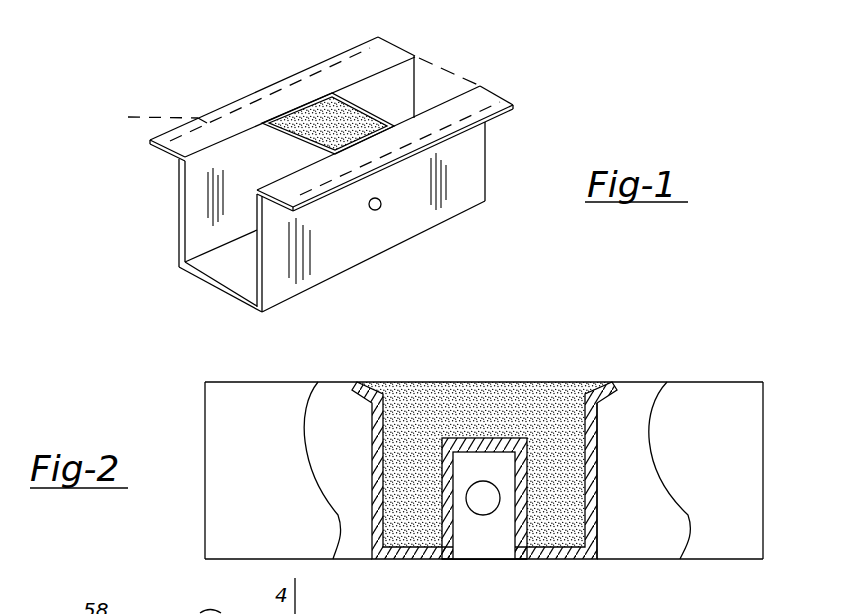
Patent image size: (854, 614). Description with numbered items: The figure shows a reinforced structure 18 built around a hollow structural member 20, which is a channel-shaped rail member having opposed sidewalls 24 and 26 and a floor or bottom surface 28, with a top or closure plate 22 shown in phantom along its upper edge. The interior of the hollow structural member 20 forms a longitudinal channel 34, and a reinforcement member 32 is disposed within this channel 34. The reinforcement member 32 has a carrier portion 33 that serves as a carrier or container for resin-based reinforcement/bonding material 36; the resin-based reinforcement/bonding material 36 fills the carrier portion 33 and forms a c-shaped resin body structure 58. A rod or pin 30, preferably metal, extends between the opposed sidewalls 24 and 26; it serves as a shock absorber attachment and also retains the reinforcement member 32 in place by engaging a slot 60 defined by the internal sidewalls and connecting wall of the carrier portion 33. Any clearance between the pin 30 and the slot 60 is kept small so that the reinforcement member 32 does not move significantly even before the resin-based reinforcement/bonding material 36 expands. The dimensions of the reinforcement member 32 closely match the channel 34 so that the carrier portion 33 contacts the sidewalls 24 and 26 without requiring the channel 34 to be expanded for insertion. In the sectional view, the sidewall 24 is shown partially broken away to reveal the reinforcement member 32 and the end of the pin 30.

In FIG. 1, the reinforced structure 18 is at (219, 88).
In FIG. 1, the hollow structural member 20 is at (474, 163).
In FIG. 2, the hollow structural member 20 is at (729, 469).
In FIG. 1, the closure plate 22 is at (296, 121).
In FIG. 1, the sidewall 24 is at (422, 207).
In FIG. 2, the sidewall 24 is at (257, 519).
In FIG. 1, the sidewall 26 is at (178, 210).
In FIG. 1, the bottom surface 28 is at (238, 279).
In FIG. 1, the pin 30 is at (382, 209).
In FIG. 2, the pin 30 is at (482, 513).
In FIG. 1, the reinforcement member 32 is at (377, 83).
In FIG. 2, the reinforcement member 32 is at (369, 441).
In FIG. 2, the carrier portion 33 is at (598, 456).
In FIG. 1, the longitudinal channel 34 is at (240, 153).
In FIG. 2, the longitudinal channel 34 is at (353, 538).
In FIG. 1, the resin-based reinforcement/bonding material 36 is at (313, 118).
In FIG. 2, the resin-based reinforcement/bonding material 36 is at (498, 408).
In FIG. 2, the c-shaped resin body structure 58 is at (473, 376).
In FIG. 2, the slot 60 is at (458, 553).